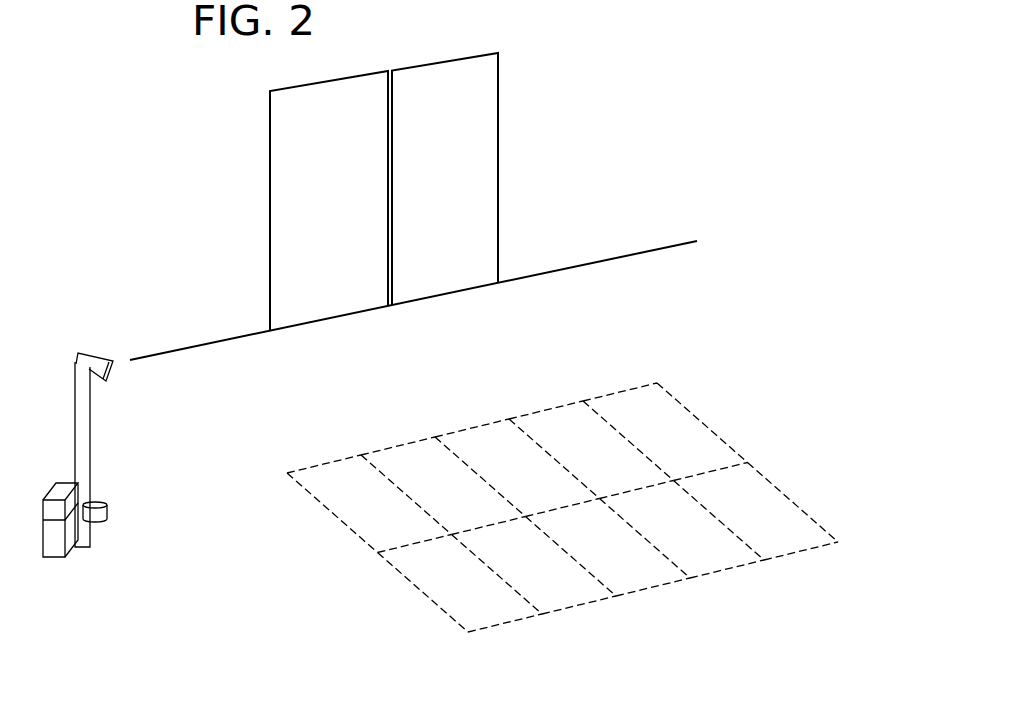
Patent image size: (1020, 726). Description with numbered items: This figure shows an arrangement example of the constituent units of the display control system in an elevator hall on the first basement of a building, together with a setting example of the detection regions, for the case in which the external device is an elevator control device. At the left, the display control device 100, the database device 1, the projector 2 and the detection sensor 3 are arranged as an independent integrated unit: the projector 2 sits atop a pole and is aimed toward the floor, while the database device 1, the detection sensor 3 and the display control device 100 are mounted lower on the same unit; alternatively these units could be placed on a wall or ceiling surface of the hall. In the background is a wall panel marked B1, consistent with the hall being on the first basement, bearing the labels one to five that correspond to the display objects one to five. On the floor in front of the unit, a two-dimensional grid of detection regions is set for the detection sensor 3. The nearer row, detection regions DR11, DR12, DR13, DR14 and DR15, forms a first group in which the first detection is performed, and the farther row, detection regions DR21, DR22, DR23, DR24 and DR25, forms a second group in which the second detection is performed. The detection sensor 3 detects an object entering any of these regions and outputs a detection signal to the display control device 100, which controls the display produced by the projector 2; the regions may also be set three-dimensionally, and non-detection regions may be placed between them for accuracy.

The board B1 is at (384, 184).
The database device 1 is at (57, 495).
The projector 2 is at (99, 357).
The detection sensor 3 is at (108, 512).
The display control device 100 is at (55, 552).
The detection region DR11 is at (488, 607).
The detection region DR12 is at (572, 593).
The detection region DR13 is at (647, 575).
The detection region DR14 is at (720, 560).
The detection region DR15 is at (787, 543).
The detection region DR21 is at (328, 475).
The detection region DR22 is at (412, 453).
The detection region DR23 is at (478, 433).
The detection region DR24 is at (550, 417).
The detection region DR25 is at (632, 402).